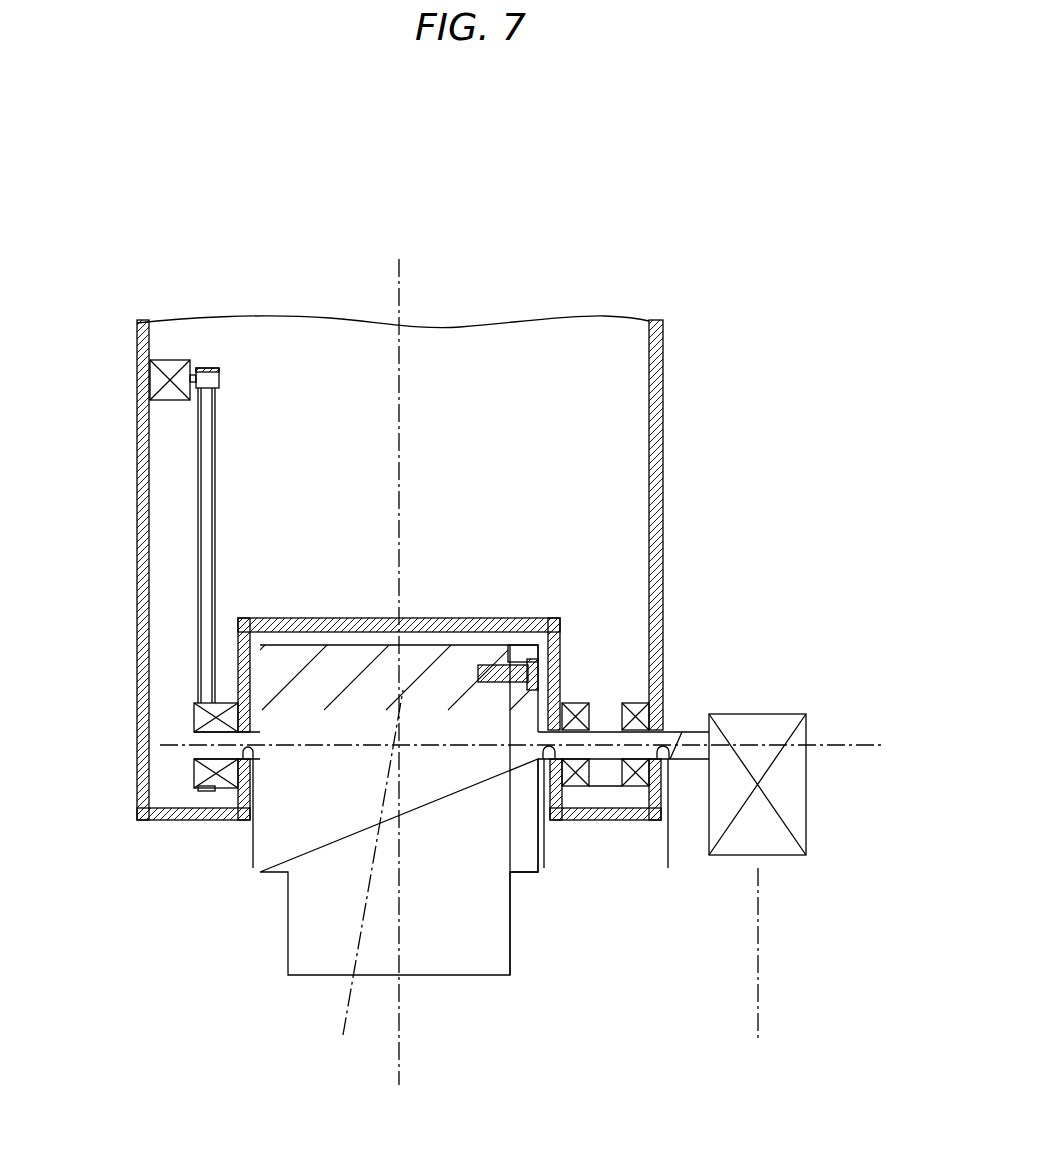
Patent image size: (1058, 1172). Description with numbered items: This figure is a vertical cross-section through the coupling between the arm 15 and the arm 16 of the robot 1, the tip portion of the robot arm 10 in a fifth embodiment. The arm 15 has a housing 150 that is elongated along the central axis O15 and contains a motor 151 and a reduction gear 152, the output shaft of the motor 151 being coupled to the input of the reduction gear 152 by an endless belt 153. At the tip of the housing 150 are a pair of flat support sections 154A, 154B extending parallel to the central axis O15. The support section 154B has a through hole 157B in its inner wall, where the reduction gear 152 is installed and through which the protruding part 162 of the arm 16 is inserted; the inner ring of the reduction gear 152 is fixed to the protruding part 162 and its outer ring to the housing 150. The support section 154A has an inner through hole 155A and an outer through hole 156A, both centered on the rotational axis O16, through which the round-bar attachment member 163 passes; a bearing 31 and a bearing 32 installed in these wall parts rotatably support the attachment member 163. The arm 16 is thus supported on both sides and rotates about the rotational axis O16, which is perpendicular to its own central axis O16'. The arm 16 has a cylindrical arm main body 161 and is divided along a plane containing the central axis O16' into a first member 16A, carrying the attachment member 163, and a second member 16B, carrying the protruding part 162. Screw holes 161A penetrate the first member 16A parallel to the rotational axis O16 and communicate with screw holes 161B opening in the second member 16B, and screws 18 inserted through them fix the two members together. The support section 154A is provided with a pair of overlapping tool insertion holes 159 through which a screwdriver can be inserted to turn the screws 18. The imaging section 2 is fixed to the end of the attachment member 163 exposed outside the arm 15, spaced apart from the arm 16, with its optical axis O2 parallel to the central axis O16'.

The robot 1 is at (672, 186).
The imaging section 2 is at (783, 710).
The robot arm 10 is at (735, 486).
The arm 15 is at (682, 325).
The housing 150 is at (667, 385).
The motor 151 is at (174, 372).
The reduction gear 152 is at (188, 712).
The endless belt 153 is at (207, 552).
The support section 154A is at (605, 826).
The support section 154B is at (192, 826).
The through hole 155A is at (546, 864).
The through hole 156A is at (668, 864).
The through hole 157B is at (251, 864).
The tool insertion holes 159 is at (656, 670).
The arm 16 is at (437, 984).
The first member 16A is at (493, 875).
The second member 16B is at (327, 858).
The arm main body 161 is at (513, 962).
The screw holes 161A is at (517, 673).
The screw holes 161B is at (473, 673).
The protruding part 162 is at (208, 752).
The attachment member 163 is at (686, 740).
The screws 18 is at (497, 660).
The bearing 31 is at (574, 694).
The bearing 32 is at (638, 694).
The central axis O15 is at (399, 282).
The rotational axis O16 is at (534, 770).
The central axis O16' is at (368, 876).
The optical axis O2 is at (758, 903).